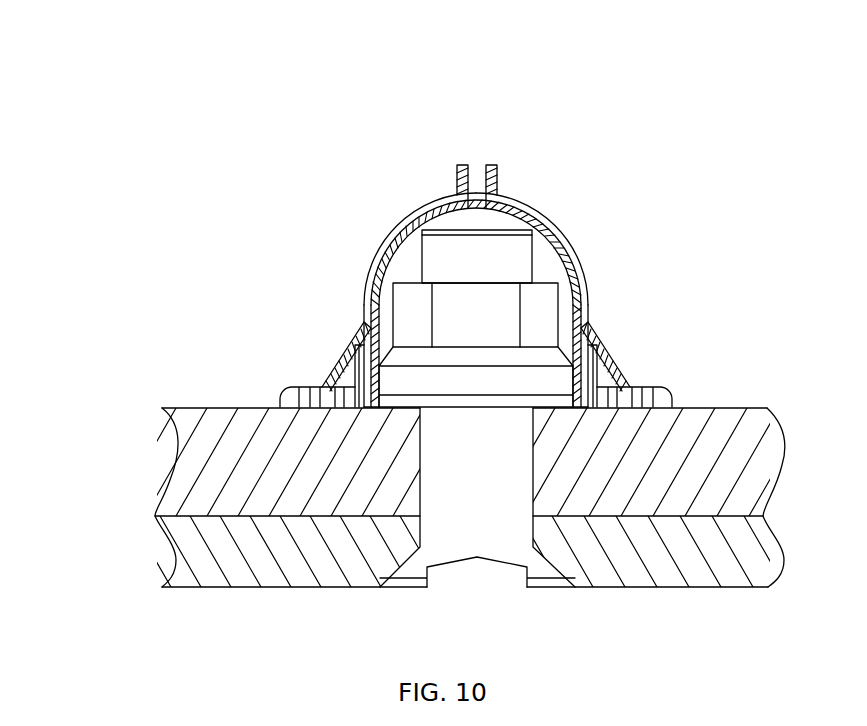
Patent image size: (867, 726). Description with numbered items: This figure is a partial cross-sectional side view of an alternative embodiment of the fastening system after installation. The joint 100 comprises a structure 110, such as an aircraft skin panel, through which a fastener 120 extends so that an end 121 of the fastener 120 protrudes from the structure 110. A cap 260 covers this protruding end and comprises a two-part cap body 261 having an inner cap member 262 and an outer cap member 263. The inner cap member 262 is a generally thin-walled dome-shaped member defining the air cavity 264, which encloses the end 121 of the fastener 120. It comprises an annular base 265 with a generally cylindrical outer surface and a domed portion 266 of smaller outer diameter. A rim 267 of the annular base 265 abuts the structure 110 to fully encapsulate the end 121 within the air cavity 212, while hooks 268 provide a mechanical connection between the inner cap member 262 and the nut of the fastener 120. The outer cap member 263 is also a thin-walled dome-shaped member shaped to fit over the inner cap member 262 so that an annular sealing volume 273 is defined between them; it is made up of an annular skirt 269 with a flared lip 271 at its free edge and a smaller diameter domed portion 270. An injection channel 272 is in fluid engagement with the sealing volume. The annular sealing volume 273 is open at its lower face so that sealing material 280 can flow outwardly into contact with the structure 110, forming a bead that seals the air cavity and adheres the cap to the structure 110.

The joint 100 is at (720, 185).
The structure 110 is at (198, 440).
The fastener 120 is at (500, 300).
The end of fastener 121 is at (510, 245).
The air cavity 212 is at (387, 240).
The cap 260 is at (552, 172).
The two-part cap body 261 is at (413, 213).
The inner cap member 262 is at (507, 198).
The outer cap member 263 is at (380, 248).
The air cavity 264 is at (447, 196).
The annular base 265 is at (600, 352).
The domed portion 266 is at (392, 228).
The rim 267 is at (582, 404).
The hooks 268 is at (370, 404).
The annular skirt 269 is at (348, 362).
The domed portion 270 is at (365, 288).
The flared lip 271 is at (628, 389).
The injection channel 272 is at (471, 166).
The annular sealing volume 273 is at (345, 372).
The sealing material 280 is at (338, 404).